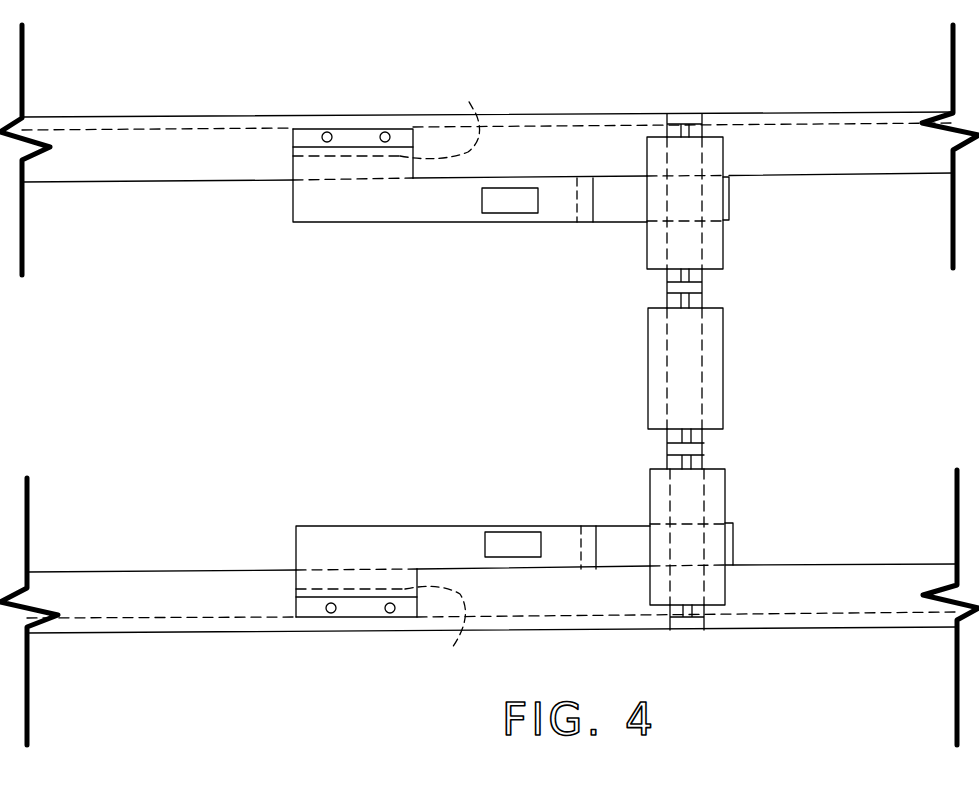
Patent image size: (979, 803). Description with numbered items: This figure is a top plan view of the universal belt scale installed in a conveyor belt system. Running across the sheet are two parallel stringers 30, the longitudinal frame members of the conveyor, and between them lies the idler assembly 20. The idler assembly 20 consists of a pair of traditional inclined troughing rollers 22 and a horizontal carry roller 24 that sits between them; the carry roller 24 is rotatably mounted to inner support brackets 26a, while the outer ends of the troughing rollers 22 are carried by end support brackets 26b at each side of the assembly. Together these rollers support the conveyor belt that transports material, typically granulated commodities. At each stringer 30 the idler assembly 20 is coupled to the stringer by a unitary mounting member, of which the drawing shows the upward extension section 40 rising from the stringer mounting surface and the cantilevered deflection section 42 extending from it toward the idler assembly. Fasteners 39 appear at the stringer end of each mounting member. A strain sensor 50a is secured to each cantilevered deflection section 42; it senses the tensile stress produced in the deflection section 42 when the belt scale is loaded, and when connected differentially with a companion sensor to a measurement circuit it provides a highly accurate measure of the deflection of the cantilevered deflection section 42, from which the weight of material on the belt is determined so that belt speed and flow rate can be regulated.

The idler assembly 20 is at (867, 348).
The inclined troughing rollers 22 is at (708, 240).
The horizontal carry roller 24 is at (713, 376).
The inner support brackets 26a is at (692, 288).
The end support brackets 26b is at (676, 113).
The stringers 30 is at (137, 168).
The fastener 39 is at (325, 131).
The upward extension section 40 is at (440, 378).
The cantilevered deflection section 42 is at (357, 130).
The strain sensor 50a is at (493, 201).